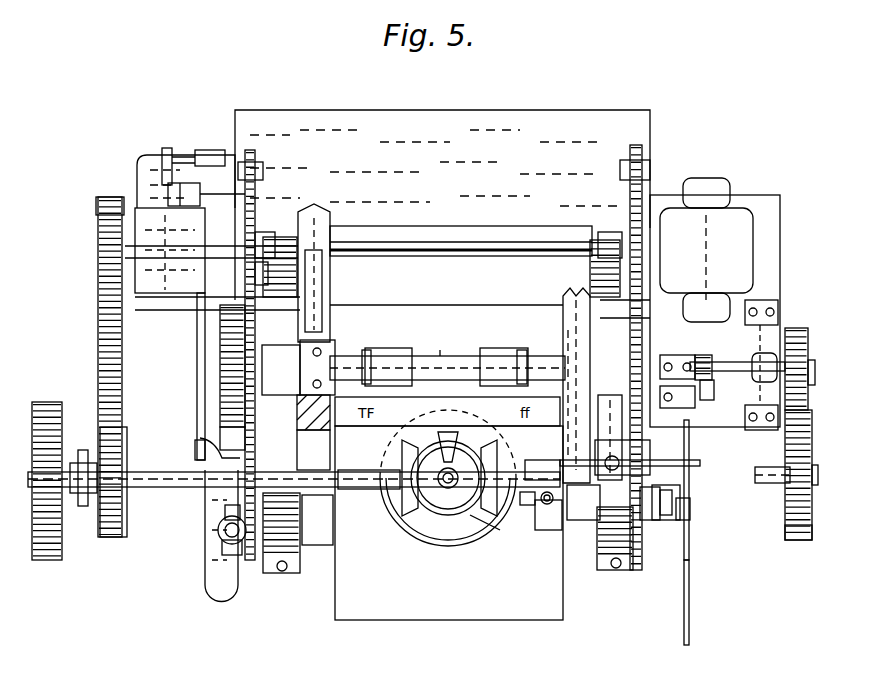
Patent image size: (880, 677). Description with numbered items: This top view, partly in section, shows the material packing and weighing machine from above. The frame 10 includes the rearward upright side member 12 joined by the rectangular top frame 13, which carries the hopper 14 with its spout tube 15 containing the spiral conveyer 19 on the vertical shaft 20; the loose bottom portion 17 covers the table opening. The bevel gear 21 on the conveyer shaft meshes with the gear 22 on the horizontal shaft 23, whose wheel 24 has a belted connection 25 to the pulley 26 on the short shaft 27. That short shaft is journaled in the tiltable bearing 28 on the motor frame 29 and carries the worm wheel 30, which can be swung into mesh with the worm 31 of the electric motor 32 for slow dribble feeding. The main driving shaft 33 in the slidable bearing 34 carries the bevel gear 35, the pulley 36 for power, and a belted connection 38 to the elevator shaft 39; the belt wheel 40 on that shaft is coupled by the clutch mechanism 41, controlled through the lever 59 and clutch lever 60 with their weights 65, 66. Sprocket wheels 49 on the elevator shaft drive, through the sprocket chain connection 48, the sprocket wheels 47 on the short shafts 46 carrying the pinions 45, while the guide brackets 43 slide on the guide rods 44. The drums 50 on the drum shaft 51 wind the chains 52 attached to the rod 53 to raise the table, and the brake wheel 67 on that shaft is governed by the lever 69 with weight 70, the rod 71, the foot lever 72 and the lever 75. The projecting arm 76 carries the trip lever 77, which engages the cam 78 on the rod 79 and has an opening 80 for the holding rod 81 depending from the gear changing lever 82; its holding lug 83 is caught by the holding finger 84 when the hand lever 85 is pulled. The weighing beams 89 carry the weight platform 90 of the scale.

The weight platform 90 is at (466, 126).
The rectangular top frame 13 is at (325, 216).
The frame 10 is at (333, 272).
The elevator shaft 39 is at (410, 256).
The rearward upright side member 12 is at (342, 306).
The drum shaft 51 is at (456, 352).
The drums 50 is at (405, 349).
The chains 52 is at (366, 350).
The rod 53 is at (440, 348).
The bevel gear 35 is at (396, 530).
The spiral conveyer 19 is at (418, 512).
The bevel gear 21 is at (432, 508).
The vertical shaft 20 is at (446, 489).
The spout tube 15 is at (441, 512).
The loose bottom portion 17 is at (455, 508).
The hopper 14 is at (470, 506).
The gear 22 is at (498, 520).
The main driving shaft 33 is at (156, 490).
The apertured guide brackets 43 is at (350, 490).
The belted connection 38 is at (100, 368).
The belt wheel 40 is at (98, 224).
The pulley 36 is at (62, 556).
The clutch mechanism 41 is at (170, 250).
The clutch lever 60 is at (160, 205).
The weight 65 is at (185, 182).
The weight 66 is at (214, 150).
The weighing beams 89 is at (257, 204).
The sprocket wheels 49 is at (258, 240).
The lever 59 is at (262, 300).
The sprocket chain connection 48 is at (256, 276).
The motor frame 29 is at (766, 196).
The electric motor 32 is at (748, 234).
The short shaft 27 is at (733, 362).
The tiltable bearing 28 is at (757, 374).
The worm 31 is at (713, 372).
The worm wheel 30 is at (710, 398).
The pulley 26 is at (798, 327).
The wheel 24 is at (810, 542).
The belted connection 25 is at (790, 540).
The horizontal shaft 23 is at (768, 484).
The opening 80 is at (689, 525).
The hand lever 85 is at (685, 598).
The holding rod 81 is at (695, 465).
The short shafts 46 is at (662, 498).
The holding finger 84 is at (652, 520).
The holding lug 83 is at (680, 522).
The projecting arm 76 is at (628, 452).
The guide rods 44 is at (606, 478).
The sprocket wheels 47 is at (262, 540).
The pinions 45 is at (310, 505).
The slidable bearing 34 is at (317, 528).
The trip lever 77 is at (550, 530).
The rod 79 is at (535, 502).
The cam 78 is at (527, 493).
The gear changing lever 82 is at (540, 466).
The lever 75 is at (197, 348).
The brake wheel 67 is at (222, 386).
The rod 71 is at (200, 452).
The weight 70 is at (218, 528).
The lever 69 is at (224, 545).
The foot lever 72 is at (219, 590).